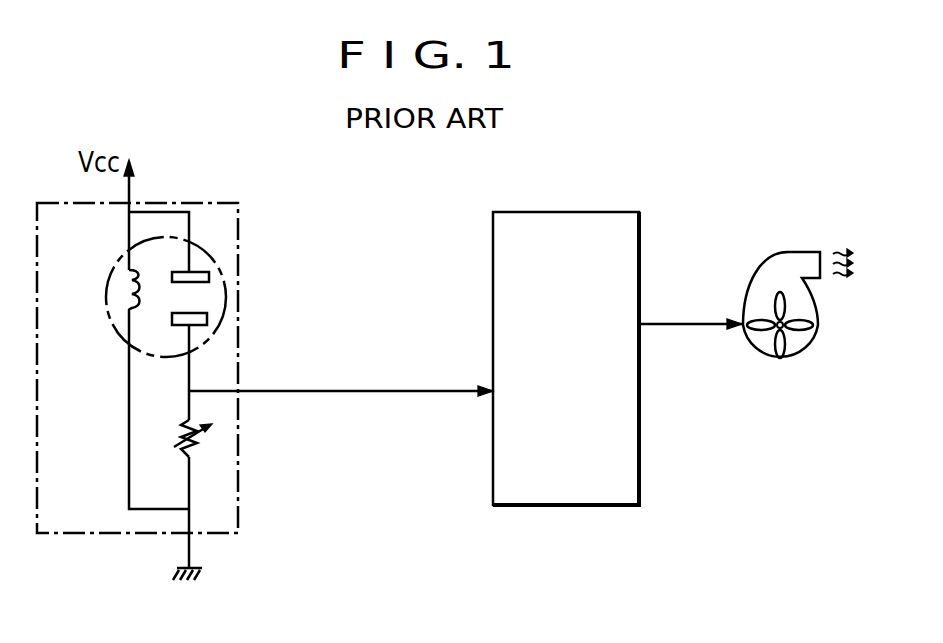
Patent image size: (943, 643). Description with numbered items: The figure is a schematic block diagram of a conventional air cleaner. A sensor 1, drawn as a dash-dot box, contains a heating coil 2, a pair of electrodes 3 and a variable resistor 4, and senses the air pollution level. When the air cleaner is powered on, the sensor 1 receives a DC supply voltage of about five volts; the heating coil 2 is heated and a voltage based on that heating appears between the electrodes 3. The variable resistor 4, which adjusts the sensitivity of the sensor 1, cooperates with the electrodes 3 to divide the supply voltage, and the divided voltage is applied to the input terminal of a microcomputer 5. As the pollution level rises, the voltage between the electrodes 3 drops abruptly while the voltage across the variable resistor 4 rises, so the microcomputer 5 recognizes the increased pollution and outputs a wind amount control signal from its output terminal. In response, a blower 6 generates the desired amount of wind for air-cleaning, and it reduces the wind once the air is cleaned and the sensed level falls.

The sensor 1 is at (238, 508).
The heating coil 2 is at (130, 283).
The electrodes 3 is at (208, 318).
The variable resistor 4 is at (201, 439).
The microcomputer 5 is at (641, 222).
The blower 6 is at (804, 250).